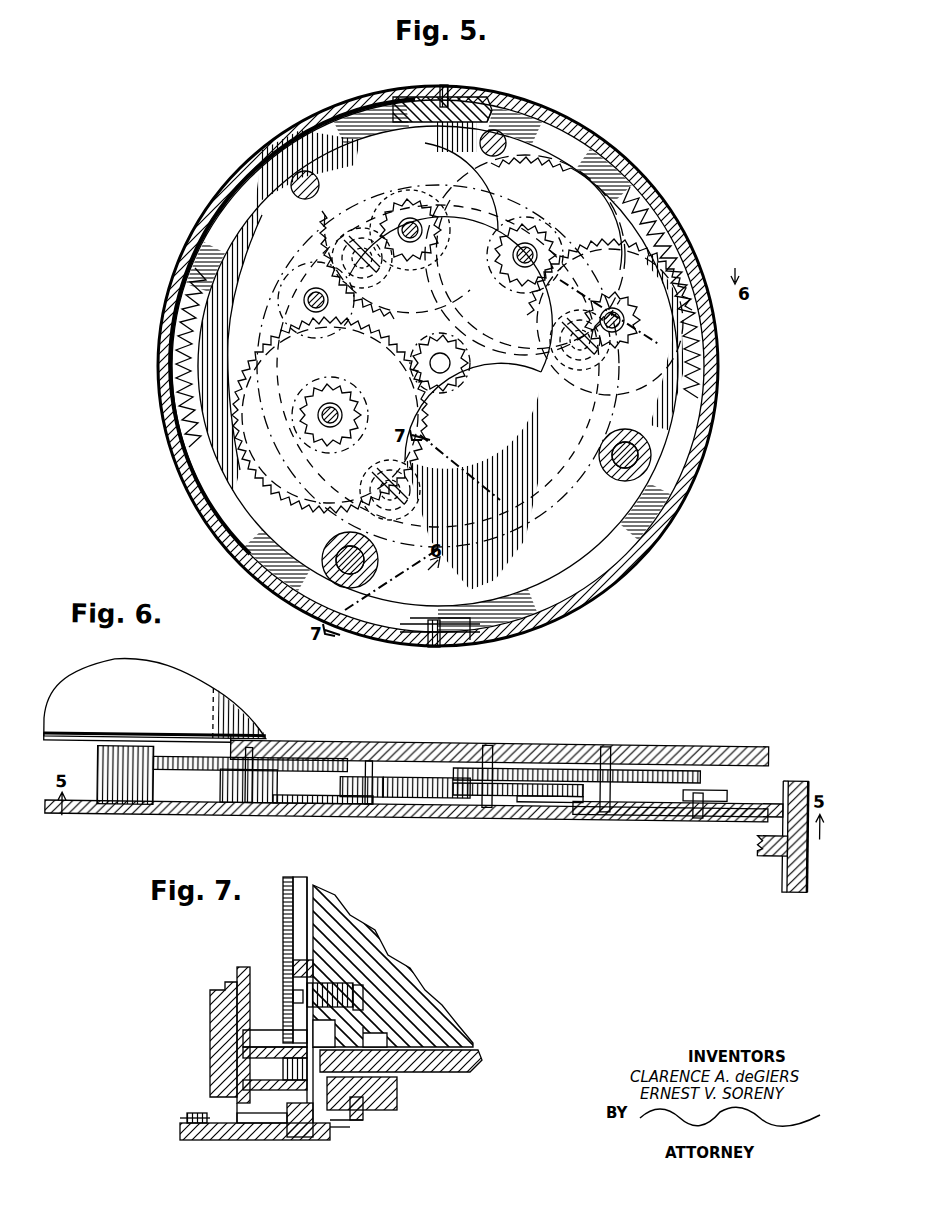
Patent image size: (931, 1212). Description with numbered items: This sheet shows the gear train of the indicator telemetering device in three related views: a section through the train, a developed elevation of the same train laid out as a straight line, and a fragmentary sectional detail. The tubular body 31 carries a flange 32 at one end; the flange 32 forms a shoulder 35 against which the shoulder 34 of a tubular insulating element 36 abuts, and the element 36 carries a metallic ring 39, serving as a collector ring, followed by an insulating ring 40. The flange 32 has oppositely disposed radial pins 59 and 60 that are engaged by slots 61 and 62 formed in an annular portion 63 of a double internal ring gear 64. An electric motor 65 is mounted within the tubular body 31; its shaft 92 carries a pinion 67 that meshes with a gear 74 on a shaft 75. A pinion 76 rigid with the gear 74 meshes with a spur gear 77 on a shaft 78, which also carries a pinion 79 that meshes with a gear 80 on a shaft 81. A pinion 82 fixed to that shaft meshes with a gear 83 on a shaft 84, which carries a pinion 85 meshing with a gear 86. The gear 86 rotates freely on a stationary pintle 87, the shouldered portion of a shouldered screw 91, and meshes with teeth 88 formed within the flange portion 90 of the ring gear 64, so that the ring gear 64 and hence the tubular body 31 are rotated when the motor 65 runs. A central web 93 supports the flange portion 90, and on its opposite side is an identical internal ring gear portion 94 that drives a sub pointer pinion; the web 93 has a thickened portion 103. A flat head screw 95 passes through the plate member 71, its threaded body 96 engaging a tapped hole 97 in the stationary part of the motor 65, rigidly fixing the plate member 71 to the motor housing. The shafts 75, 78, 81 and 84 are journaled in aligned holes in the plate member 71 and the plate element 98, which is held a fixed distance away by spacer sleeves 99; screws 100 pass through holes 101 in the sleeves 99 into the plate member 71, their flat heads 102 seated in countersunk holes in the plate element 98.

In FIG. 7, the tubular body 31 is at (482, 1062).
In FIG. 5, the flange 32 is at (490, 95).
In FIG. 7, the shoulder 34 is at (350, 1128).
In FIG. 7, the shoulder 35 is at (335, 1140).
In FIG. 7, the tubular insulating element 36 is at (400, 1090).
In FIG. 7, the metallic ring 39 is at (365, 1122).
In FIG. 7, the insulating ring 40 is at (380, 1112).
In FIG. 5, the radial pin 59 is at (458, 86).
In FIG. 5, the radial pin 60 is at (442, 652).
In FIG. 5, the slot 61 is at (440, 86).
In FIG. 5, the slot 62 is at (425, 642).
In FIG. 5, the annular portion 63 is at (222, 492).
In FIG. 5, the double internal ring gear 64 is at (178, 365).
In FIG. 6, the double internal ring gear 64 is at (800, 870).
In FIG. 5, the electric motor 65 is at (548, 505).
In FIG. 6, the electric motor 65 is at (215, 683).
In FIG. 7, the electric motor 65 is at (445, 990).
In FIG. 5, the pinion 67 is at (445, 385).
In FIG. 6, the pinion 67 is at (130, 806).
In FIG. 5, the plate member 71 is at (512, 580).
In FIG. 6, the plate member 71 is at (325, 738).
In FIG. 7, the plate member 71 is at (330, 950).
In FIG. 5, the gear 74 is at (435, 395).
In FIG. 6, the gear 74 is at (200, 770).
In FIG. 7, the gear 74 is at (283, 965).
In FIG. 5, the shaft 75 is at (340, 425).
In FIG. 6, the shaft 75 is at (250, 815).
In FIG. 5, the pinion 76 is at (352, 398).
In FIG. 6, the pinion 76 is at (228, 800).
In FIG. 5, the spur gear 77 is at (290, 232).
In FIG. 6, the spur gear 77 is at (300, 805).
In FIG. 5, the shaft 78 is at (304, 298).
In FIG. 6, the shaft 78 is at (368, 815).
In FIG. 5, the pinion 79 is at (318, 255).
In FIG. 6, the pinion 79 is at (370, 775).
In FIG. 6, the gear 80 is at (525, 795).
In FIG. 5, the shaft 81 is at (406, 218).
In FIG. 6, the shaft 81 is at (487, 740).
In FIG. 5, the pinion 82 is at (422, 200).
In FIG. 6, the pinion 82 is at (500, 765).
In FIG. 5, the gear 83 is at (550, 175).
In FIG. 6, the gear 83 is at (650, 765).
In FIG. 5, the shaft 84 is at (530, 250).
In FIG. 6, the shaft 84 is at (606, 740).
In FIG. 5, the pinion 85 is at (520, 280).
In FIG. 6, the pinion 85 is at (560, 800).
In FIG. 5, the gear 86 is at (695, 318).
In FIG. 6, the gear 86 is at (655, 810).
In FIG. 5, the stationary pintle 87 is at (625, 330).
In FIG. 6, the stationary pintle 87 is at (696, 812).
In FIG. 5, the teeth 88 is at (178, 388).
In FIG. 6, the teeth 88 is at (788, 770).
In FIG. 7, the teeth 88 is at (270, 1110).
In FIG. 6, the flange portion 90 is at (808, 772).
In FIG. 7, the flange portion 90 is at (180, 1130).
In FIG. 6, the shouldered screw 91 is at (710, 783).
In FIG. 5, the shaft 92 is at (450, 365).
In FIG. 6, the central web 93 is at (765, 845).
In FIG. 6, the internal ring gear portion 94 is at (785, 880).
In FIG. 7, the internal ring gear portion 94 is at (198, 1112).
In FIG. 5, the flat head screw 95 is at (362, 238).
In FIG. 7, the flat head screw 95 is at (293, 995).
In FIG. 5, the threaded body 96 is at (471, 374).
In FIG. 7, the threaded body 96 is at (310, 975).
In FIG. 7, the tapped hole 97 is at (355, 995).
In FIG. 6, the plate element 98 is at (440, 815).
In FIG. 7, the plate element 98 is at (243, 967).
In FIG. 5, the spacer sleeve 99 is at (340, 545).
In FIG. 7, the spacer sleeve 99 is at (265, 1040).
In FIG. 5, the screw 100 is at (350, 560).
In FIG. 7, the screw 100 is at (250, 1050).
In FIG. 7, the hole 101 is at (248, 1082).
In FIG. 7, the flat head 102 is at (245, 1060).
In FIG. 7, the thickened portion 103 is at (218, 1015).